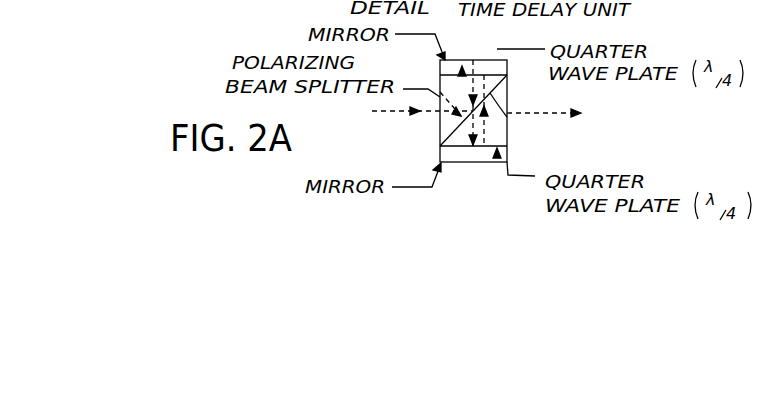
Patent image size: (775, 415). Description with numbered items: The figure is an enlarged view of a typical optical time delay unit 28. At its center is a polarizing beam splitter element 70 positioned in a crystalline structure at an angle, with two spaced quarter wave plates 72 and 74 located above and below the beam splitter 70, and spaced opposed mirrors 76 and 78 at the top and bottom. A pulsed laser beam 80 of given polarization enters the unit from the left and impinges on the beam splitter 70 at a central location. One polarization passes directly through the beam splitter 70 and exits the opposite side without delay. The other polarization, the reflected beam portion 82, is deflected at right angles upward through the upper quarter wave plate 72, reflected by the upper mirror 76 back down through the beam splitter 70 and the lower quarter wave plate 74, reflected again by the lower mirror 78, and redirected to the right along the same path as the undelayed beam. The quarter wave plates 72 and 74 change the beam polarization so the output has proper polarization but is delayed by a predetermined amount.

The polarizing beam splitter element 70 is at (507, 117).
The upper quarter wave plate 72 is at (451, 74).
The lower quarter wave plate 74 is at (440, 153).
The upper mirror 76 is at (490, 72).
The lower mirror 78 is at (486, 165).
The reflected beam portion 82 is at (438, 86).
The pulsed laser beam 80 is at (383, 113).
The time delay unit 28 is at (511, 92).